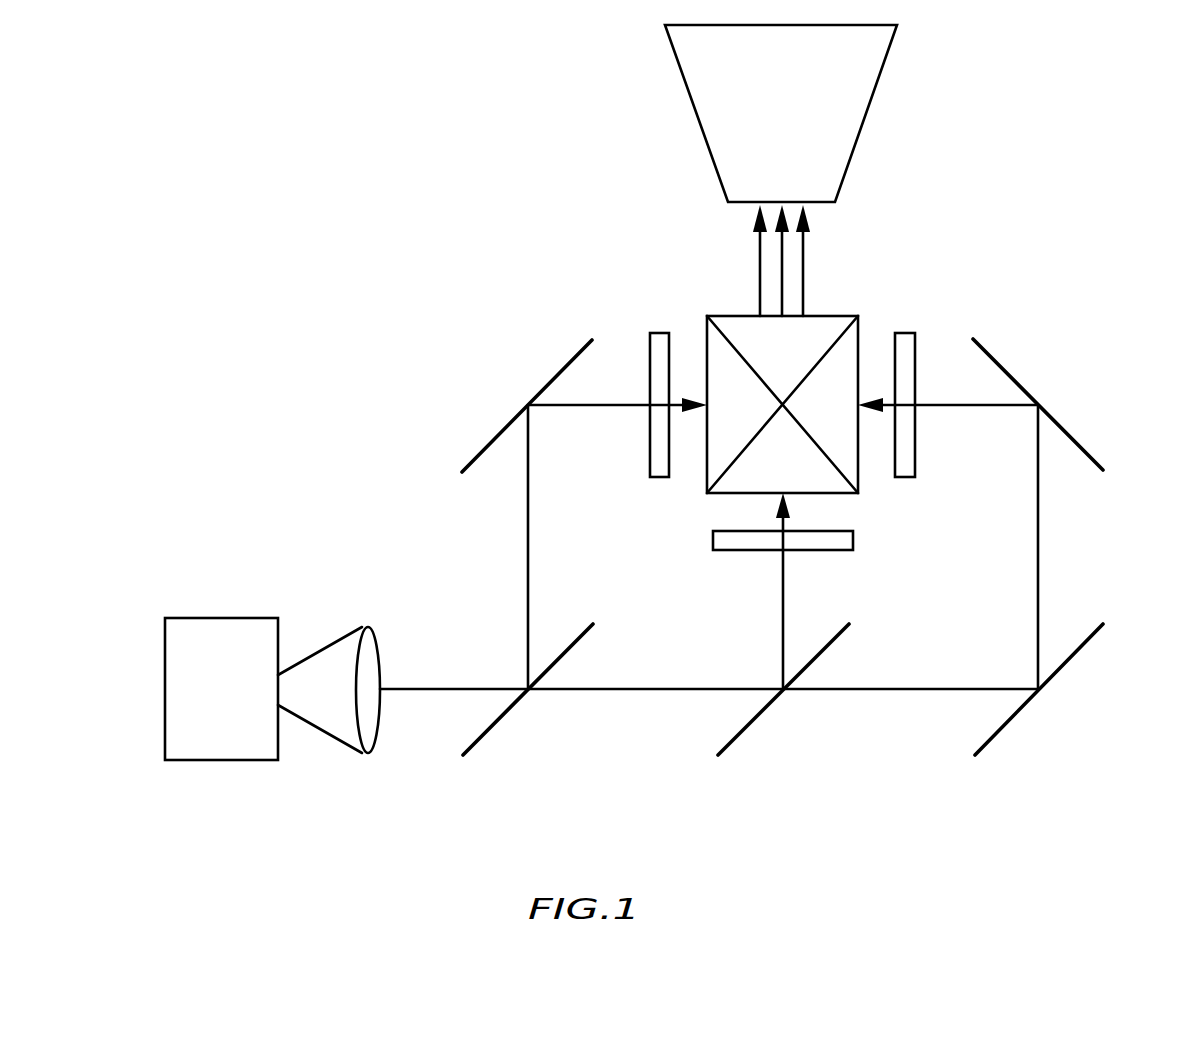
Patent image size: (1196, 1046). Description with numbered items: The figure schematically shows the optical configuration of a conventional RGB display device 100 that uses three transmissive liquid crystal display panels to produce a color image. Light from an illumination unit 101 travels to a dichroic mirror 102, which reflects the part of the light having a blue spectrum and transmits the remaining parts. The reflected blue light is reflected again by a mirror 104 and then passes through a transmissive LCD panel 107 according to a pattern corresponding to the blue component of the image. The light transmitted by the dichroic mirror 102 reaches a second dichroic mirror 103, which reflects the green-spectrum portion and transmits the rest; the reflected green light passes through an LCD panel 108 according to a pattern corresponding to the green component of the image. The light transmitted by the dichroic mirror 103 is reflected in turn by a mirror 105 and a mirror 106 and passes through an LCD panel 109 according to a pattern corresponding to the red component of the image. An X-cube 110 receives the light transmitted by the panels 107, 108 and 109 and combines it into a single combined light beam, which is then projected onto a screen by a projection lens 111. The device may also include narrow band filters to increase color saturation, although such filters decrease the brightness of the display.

The RGB display device 100 is at (1096, 150).
The illumination unit 101 is at (220, 618).
The dichroic mirror 102 is at (495, 724).
The dichroic mirror 103 is at (750, 724).
The mirror 104 is at (575, 353).
The mirror 105 is at (1005, 724).
The mirror 106 is at (1010, 372).
The transmissive LCD panel 107 is at (637, 345).
The LCD panel 108 is at (744, 551).
The LCD panel 109 is at (900, 334).
The X-cube 110 is at (817, 340).
The projection lens 111 is at (861, 132).